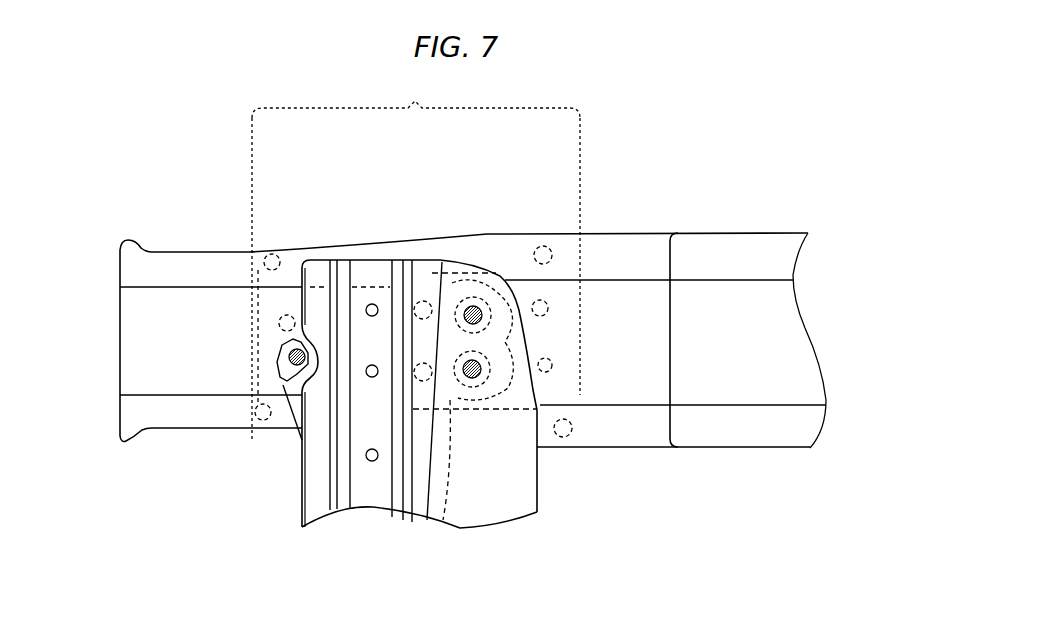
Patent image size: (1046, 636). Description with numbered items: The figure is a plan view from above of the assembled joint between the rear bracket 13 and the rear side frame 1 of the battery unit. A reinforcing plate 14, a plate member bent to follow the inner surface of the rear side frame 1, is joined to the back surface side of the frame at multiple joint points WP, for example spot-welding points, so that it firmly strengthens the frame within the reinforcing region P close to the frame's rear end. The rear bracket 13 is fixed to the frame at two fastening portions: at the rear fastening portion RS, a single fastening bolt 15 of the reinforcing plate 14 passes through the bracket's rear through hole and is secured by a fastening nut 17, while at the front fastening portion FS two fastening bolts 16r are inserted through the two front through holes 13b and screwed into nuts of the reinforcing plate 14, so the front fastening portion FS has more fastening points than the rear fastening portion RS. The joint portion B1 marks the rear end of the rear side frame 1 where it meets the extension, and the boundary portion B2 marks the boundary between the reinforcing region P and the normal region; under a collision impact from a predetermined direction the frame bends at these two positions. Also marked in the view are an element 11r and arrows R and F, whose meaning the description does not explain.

The rear side frame 1 is at (193, 255).
The rear bracket 11r is at (325, 248).
The rear bracket 13 is at (458, 283).
The front through holes 13b is at (443, 524).
The reinforcing plate 14 is at (604, 233).
The fastening bolt 15 is at (283, 343).
The fastening bolts 16r is at (477, 303).
The fastening nut 17 is at (285, 362).
The reinforcing region P is at (416, 257).
The joint points WP is at (276, 252).
The rearward direction R is at (110, 213).
The forward direction F is at (812, 213).
The joint portion B1 is at (120, 453).
The boundary portion B2 is at (250, 453).
The rear fastening portion RS is at (296, 395).
The front fastening portion FS is at (472, 380).